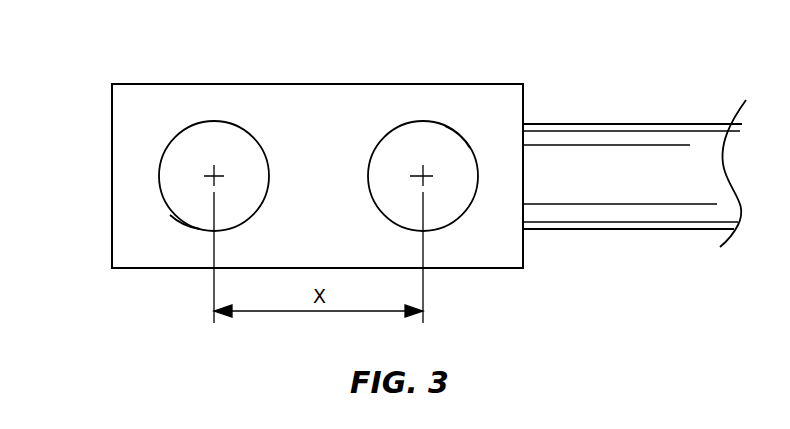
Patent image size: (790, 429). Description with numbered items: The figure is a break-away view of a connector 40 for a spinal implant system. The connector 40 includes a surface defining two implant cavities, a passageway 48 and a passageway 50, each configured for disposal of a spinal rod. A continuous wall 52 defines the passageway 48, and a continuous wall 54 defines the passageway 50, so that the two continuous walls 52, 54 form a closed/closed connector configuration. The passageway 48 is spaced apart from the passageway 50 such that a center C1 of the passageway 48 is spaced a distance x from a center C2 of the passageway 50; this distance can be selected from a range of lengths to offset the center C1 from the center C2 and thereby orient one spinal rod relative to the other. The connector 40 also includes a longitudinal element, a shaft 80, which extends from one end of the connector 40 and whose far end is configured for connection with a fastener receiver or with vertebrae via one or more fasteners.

The connector 40 is at (310, 108).
The passageway 48 is at (432, 142).
The passageway 50 is at (191, 146).
The continuous wall 52 is at (458, 130).
The continuous wall 54 is at (188, 226).
The shaft 80 is at (610, 143).
The center C1 is at (430, 175).
The center C2 is at (219, 175).